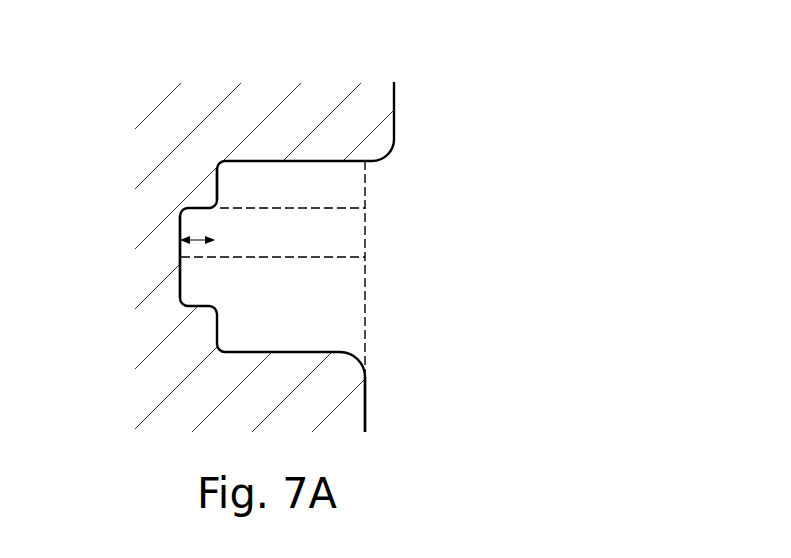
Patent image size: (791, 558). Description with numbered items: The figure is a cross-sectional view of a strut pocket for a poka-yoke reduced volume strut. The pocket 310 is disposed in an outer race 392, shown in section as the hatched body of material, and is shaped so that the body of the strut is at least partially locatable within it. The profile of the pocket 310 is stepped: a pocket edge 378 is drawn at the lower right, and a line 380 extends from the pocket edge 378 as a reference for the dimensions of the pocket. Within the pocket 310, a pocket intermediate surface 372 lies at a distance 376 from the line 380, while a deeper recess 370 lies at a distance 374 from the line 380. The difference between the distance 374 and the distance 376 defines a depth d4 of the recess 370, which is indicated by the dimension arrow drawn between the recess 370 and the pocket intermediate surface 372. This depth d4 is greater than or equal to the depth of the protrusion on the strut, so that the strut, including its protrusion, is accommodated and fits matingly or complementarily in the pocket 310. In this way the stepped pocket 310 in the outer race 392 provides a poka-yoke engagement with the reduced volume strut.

The outer race 392 is at (255, 110).
The pocket 310 is at (293, 162).
The pocket intermediate surface 372 is at (217, 187).
The distance 376 is at (245, 208).
The depth of recess d4 is at (210, 241).
The distance 374 is at (217, 258).
The recess 370 is at (182, 297).
The line 380 is at (367, 312).
The pocket edge 378 is at (367, 400).